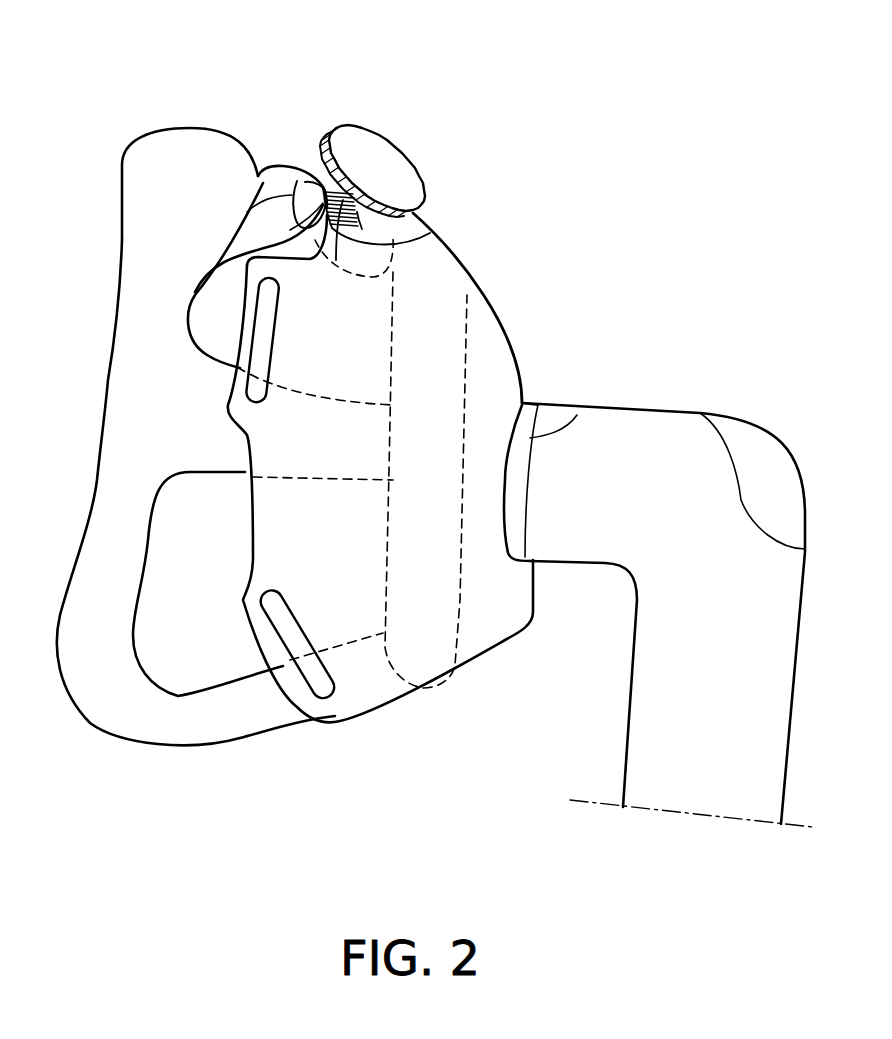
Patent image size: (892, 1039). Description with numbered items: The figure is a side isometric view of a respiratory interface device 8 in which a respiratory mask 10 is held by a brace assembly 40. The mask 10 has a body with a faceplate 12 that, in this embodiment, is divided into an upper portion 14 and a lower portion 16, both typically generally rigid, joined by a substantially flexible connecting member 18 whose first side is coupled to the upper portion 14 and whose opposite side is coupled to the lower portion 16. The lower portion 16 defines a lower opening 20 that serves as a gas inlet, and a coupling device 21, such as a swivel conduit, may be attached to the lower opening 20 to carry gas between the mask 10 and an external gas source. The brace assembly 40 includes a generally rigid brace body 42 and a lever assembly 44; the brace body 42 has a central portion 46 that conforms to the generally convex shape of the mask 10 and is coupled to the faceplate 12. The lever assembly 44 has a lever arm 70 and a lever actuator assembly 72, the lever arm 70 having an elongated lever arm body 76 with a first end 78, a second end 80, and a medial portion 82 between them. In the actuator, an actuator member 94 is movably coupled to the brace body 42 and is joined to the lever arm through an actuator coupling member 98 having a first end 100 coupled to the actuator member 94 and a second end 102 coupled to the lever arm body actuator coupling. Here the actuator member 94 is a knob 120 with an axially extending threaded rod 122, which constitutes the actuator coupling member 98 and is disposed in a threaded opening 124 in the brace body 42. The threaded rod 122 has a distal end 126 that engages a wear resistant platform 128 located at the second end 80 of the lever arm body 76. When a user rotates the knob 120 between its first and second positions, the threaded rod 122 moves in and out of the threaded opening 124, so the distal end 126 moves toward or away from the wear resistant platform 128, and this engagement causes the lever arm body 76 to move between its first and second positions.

The respiratory interface device 8 is at (650, 165).
The respiratory mask 10 is at (157, 150).
The faceplate 12 is at (283, 168).
The upper portion 14 is at (263, 183).
The lower portion 16 is at (190, 667).
The connecting member 18 is at (200, 434).
The lower opening 20 is at (577, 415).
The coupling device 21 is at (663, 427).
The brace assembly 40 is at (483, 327).
The brace body 42 is at (477, 647).
The lever assembly 44 is at (358, 110).
The central portion 46 is at (518, 588).
The lever arm 70 is at (343, 200).
The lever actuator assembly 72 is at (409, 170).
The lever arm body 76 is at (330, 233).
The first end 78 is at (380, 270).
The second end 80 is at (247, 211).
The medial portion 82 is at (380, 237).
The actuator member 94 is at (313, 183).
The actuator coupling member 98 is at (320, 180).
The first end 100 is at (402, 148).
The second end 102 is at (210, 262).
The knob 120 is at (413, 152).
The threaded rod 122 is at (358, 272).
The threaded opening 124 is at (430, 233).
The distal end 126 is at (330, 247).
The wear resistant platform 128 is at (290, 230).